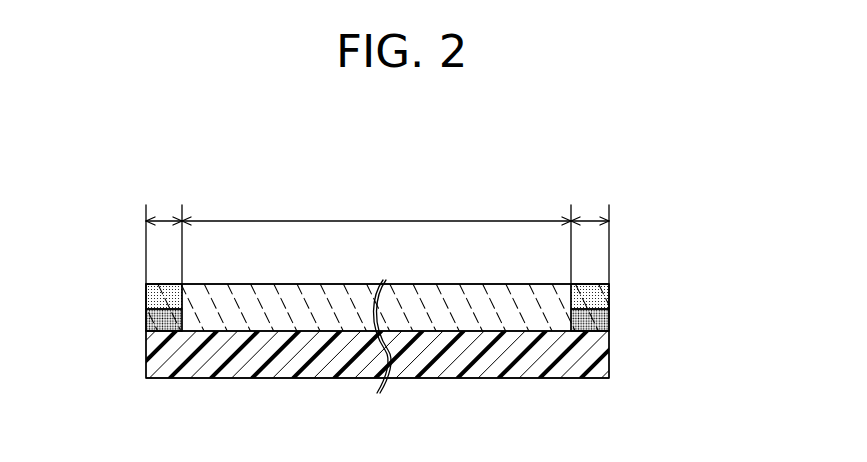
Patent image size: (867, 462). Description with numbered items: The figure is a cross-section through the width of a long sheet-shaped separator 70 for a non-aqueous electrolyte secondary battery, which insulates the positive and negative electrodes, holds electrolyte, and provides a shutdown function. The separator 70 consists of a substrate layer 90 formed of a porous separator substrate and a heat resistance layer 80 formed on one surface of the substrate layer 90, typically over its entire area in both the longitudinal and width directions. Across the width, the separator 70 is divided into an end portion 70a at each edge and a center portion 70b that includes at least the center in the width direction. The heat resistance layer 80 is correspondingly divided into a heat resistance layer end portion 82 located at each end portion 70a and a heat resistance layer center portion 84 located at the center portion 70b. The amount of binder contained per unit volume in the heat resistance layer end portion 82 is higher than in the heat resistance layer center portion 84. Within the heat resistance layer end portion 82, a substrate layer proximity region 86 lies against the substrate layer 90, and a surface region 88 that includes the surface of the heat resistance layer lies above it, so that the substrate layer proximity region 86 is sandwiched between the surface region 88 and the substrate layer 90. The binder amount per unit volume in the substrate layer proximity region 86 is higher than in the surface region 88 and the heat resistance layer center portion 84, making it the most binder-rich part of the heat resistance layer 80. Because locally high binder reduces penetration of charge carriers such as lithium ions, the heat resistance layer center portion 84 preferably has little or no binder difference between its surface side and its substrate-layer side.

The separator 70 is at (547, 152).
The end portion 70a is at (163, 218).
The center portion 70b is at (381, 206).
The heat resistance layer 80 is at (400, 283).
The heat resistance layer end portion 82 is at (378, 303).
The heat resistance layer center portion 84 is at (552, 287).
The substrate layer proximity region 86 is at (148, 322).
The surface region 88 is at (148, 301).
The substrate layer 90 is at (602, 366).